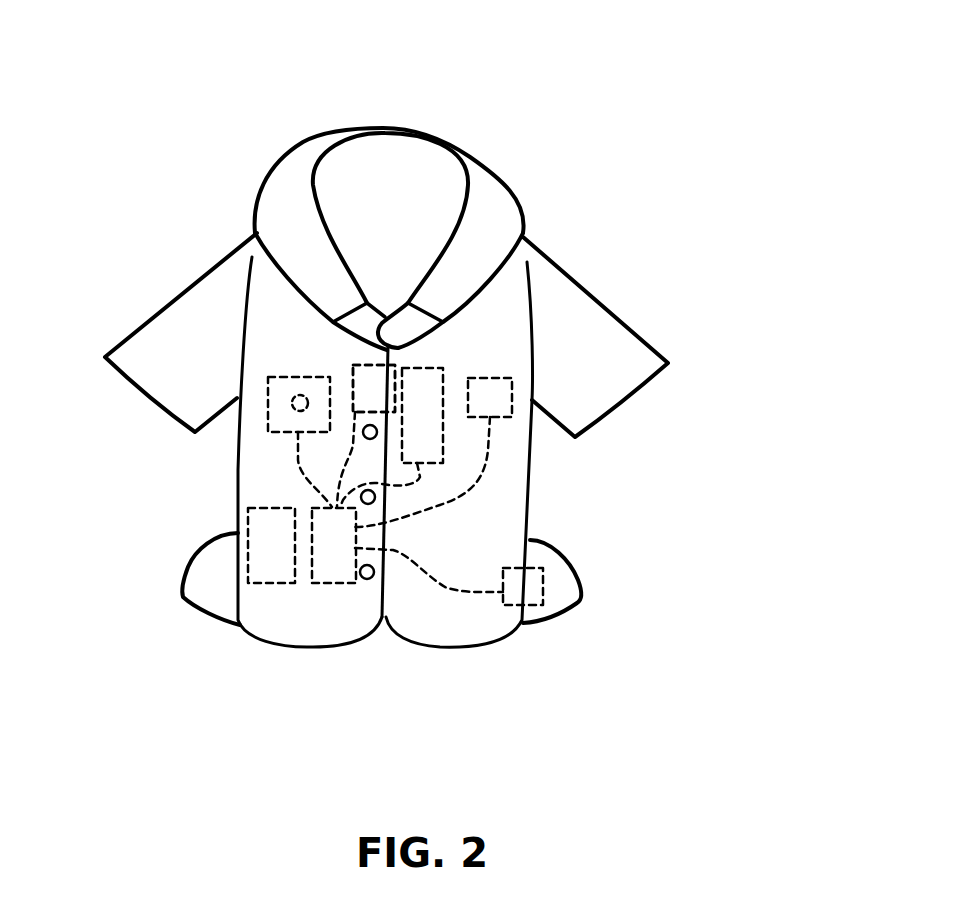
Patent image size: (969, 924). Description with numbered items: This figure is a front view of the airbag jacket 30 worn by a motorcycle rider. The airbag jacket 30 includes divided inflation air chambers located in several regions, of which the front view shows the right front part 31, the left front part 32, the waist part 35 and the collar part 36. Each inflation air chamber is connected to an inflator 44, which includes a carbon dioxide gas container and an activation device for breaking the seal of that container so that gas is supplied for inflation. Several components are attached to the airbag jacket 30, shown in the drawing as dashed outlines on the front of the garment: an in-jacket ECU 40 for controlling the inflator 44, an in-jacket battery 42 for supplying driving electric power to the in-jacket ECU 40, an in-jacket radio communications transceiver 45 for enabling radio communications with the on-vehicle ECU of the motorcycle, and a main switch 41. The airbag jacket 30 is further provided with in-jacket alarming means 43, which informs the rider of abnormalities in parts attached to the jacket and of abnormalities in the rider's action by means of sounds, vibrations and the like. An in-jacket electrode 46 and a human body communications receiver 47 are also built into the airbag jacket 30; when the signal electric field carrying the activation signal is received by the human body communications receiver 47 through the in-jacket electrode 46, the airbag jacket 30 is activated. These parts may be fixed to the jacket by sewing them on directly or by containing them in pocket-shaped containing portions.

The airbag jacket 30 is at (695, 138).
The right front part 31 is at (257, 487).
The left front part 32 is at (513, 490).
The waist part 35 is at (203, 597).
The collar part 36 is at (492, 188).
The in-jacket ECU 40 is at (323, 583).
The main switch 41 is at (292, 377).
The in-jacket battery 42 is at (543, 588).
The in-jacket alarming means 43 is at (493, 377).
The inflator 44 is at (423, 368).
The in-jacket radio communications transceiver 45 is at (272, 583).
The in-jacket electrode 46 is at (360, 362).
The human body communications receiver 47 is at (360, 362).